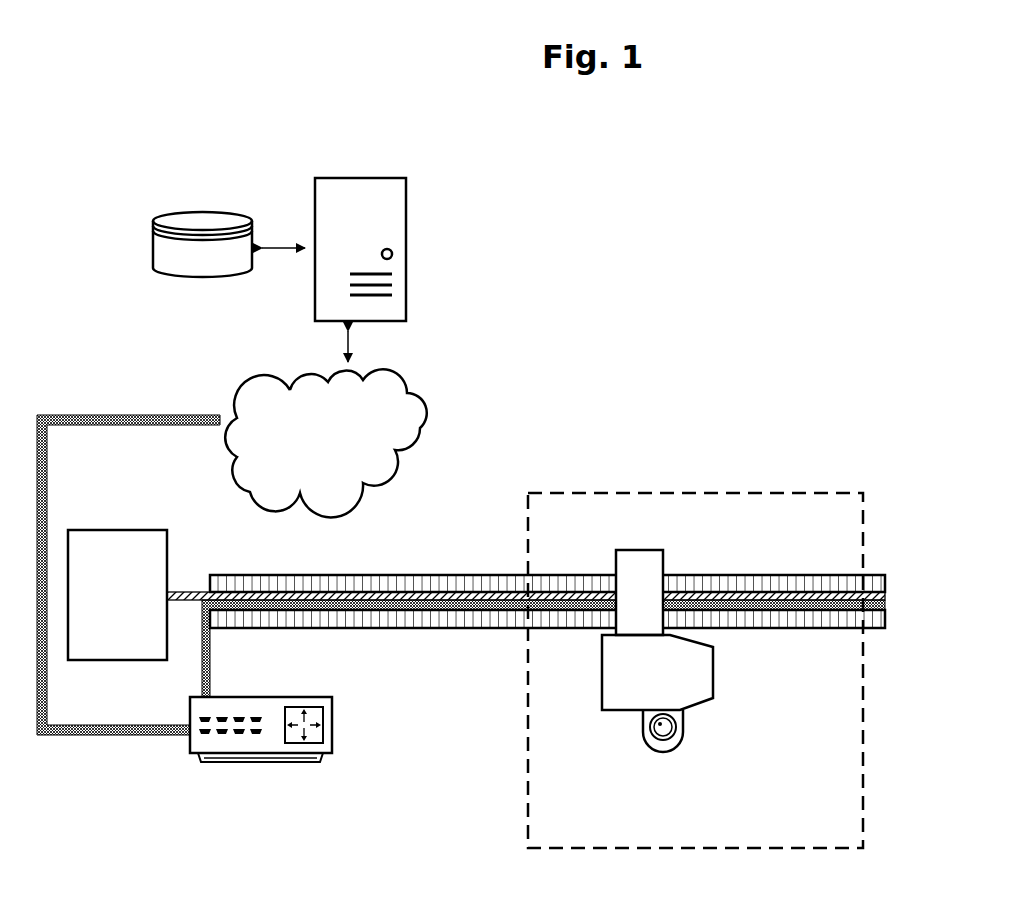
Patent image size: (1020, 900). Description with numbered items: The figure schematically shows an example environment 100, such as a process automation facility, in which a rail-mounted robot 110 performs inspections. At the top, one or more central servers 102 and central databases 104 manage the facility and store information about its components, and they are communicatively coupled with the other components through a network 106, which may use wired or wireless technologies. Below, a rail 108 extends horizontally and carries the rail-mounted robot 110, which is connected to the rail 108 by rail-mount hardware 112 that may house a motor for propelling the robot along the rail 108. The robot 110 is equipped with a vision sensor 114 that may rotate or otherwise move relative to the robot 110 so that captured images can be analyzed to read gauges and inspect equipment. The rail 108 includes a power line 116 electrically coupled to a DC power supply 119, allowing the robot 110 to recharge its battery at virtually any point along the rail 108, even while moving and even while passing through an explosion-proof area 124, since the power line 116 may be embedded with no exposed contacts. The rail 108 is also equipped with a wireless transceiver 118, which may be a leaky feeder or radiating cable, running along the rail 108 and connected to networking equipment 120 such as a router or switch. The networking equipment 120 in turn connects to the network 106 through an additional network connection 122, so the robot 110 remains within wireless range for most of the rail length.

The environment 100 is at (267, 88).
The central server 102 is at (345, 178).
The central database 104 is at (202, 244).
The network 106 is at (326, 443).
The rail 108 is at (408, 575).
The rail-mounted robot 110 is at (657, 672).
The rail-mount hardware 112 is at (625, 550).
The vision sensor 114 is at (630, 740).
The power line 116 is at (355, 575).
The wireless transceiver 118 is at (405, 608).
The DC power supply 119 is at (117, 595).
The networking equipment 120 is at (238, 697).
The network connection 122 is at (114, 415).
The explosion-proof area 124 is at (548, 493).